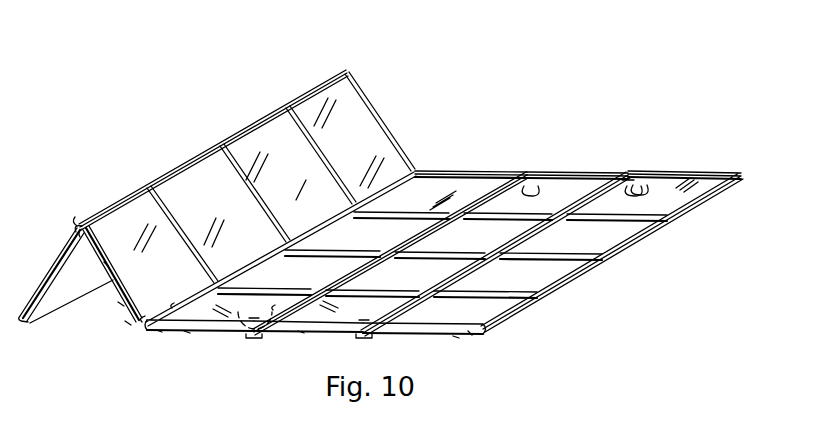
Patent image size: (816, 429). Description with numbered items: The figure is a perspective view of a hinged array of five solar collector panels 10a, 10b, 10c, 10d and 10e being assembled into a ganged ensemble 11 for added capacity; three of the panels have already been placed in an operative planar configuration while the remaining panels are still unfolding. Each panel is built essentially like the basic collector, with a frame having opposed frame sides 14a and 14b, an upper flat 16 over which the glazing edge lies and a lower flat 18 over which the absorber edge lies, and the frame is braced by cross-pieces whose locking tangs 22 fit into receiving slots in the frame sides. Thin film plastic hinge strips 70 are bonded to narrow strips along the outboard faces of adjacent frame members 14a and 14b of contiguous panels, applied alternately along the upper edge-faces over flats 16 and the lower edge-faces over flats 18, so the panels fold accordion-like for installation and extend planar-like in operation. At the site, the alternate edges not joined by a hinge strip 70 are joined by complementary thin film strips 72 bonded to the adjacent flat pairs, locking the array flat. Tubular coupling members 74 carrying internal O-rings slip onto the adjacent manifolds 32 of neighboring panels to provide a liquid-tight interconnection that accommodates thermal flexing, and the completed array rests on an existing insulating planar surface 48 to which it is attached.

The panel 10a is at (691, 172).
The panel 10b is at (560, 190).
The panel 10c is at (462, 187).
The panel 10d is at (362, 122).
The panel 10e is at (58, 254).
The folding panel assembly 11 is at (235, 349).
The frame side 14a is at (268, 118).
The frame side 14b is at (230, 140).
The flat 16 is at (112, 300).
The flat 18 is at (108, 262).
The locking tang 22 is at (180, 225).
The manifold 32 is at (127, 323).
The insulating planar surface 48 is at (628, 178).
The hinge strip 70 is at (80, 232).
The hinge strip 72 is at (250, 340).
The coupling member 74 is at (253, 340).